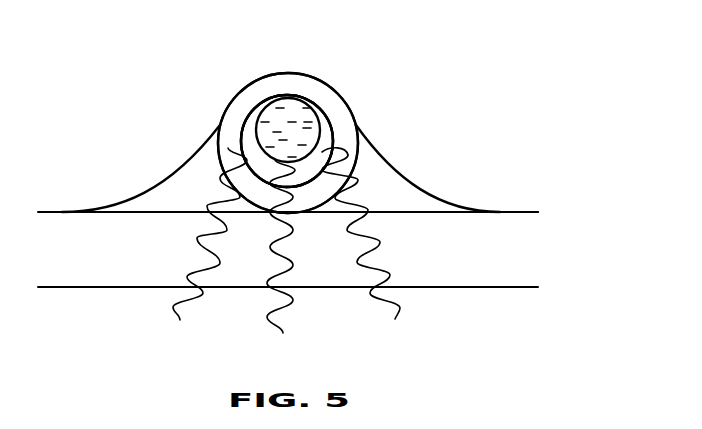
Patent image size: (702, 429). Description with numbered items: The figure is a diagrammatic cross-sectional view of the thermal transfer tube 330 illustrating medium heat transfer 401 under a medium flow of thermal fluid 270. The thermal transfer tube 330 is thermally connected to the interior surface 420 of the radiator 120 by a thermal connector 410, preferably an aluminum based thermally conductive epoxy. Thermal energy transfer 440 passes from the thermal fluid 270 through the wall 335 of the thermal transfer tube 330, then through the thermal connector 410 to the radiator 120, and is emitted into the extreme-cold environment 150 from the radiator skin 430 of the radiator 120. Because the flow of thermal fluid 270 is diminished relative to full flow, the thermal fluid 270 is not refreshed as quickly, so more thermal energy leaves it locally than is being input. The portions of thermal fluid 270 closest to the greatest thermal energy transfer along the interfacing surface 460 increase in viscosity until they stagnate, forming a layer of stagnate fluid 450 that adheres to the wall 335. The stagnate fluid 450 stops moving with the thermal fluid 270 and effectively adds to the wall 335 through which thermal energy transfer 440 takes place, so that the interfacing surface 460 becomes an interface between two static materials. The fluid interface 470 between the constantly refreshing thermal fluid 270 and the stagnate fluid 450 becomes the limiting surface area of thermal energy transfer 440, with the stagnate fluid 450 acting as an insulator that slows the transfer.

The medium heat transfer 401 is at (138, 100).
The thermal connector 410 is at (417, 181).
The interior surface 420 is at (60, 212).
The radiator skin 430 is at (55, 287).
The thermal energy transfer 440 is at (399, 310).
The stagnate fluid 450 is at (323, 141).
The interfacing surface 460 is at (218, 133).
The fluid interface 470 is at (245, 118).
The thermal transfer tube 330 is at (313, 74).
The wall 335 is at (273, 85).
The thermal fluid 270 is at (309, 112).
The radiator 120 is at (499, 192).
The extreme-cold environment 150 is at (262, 358).